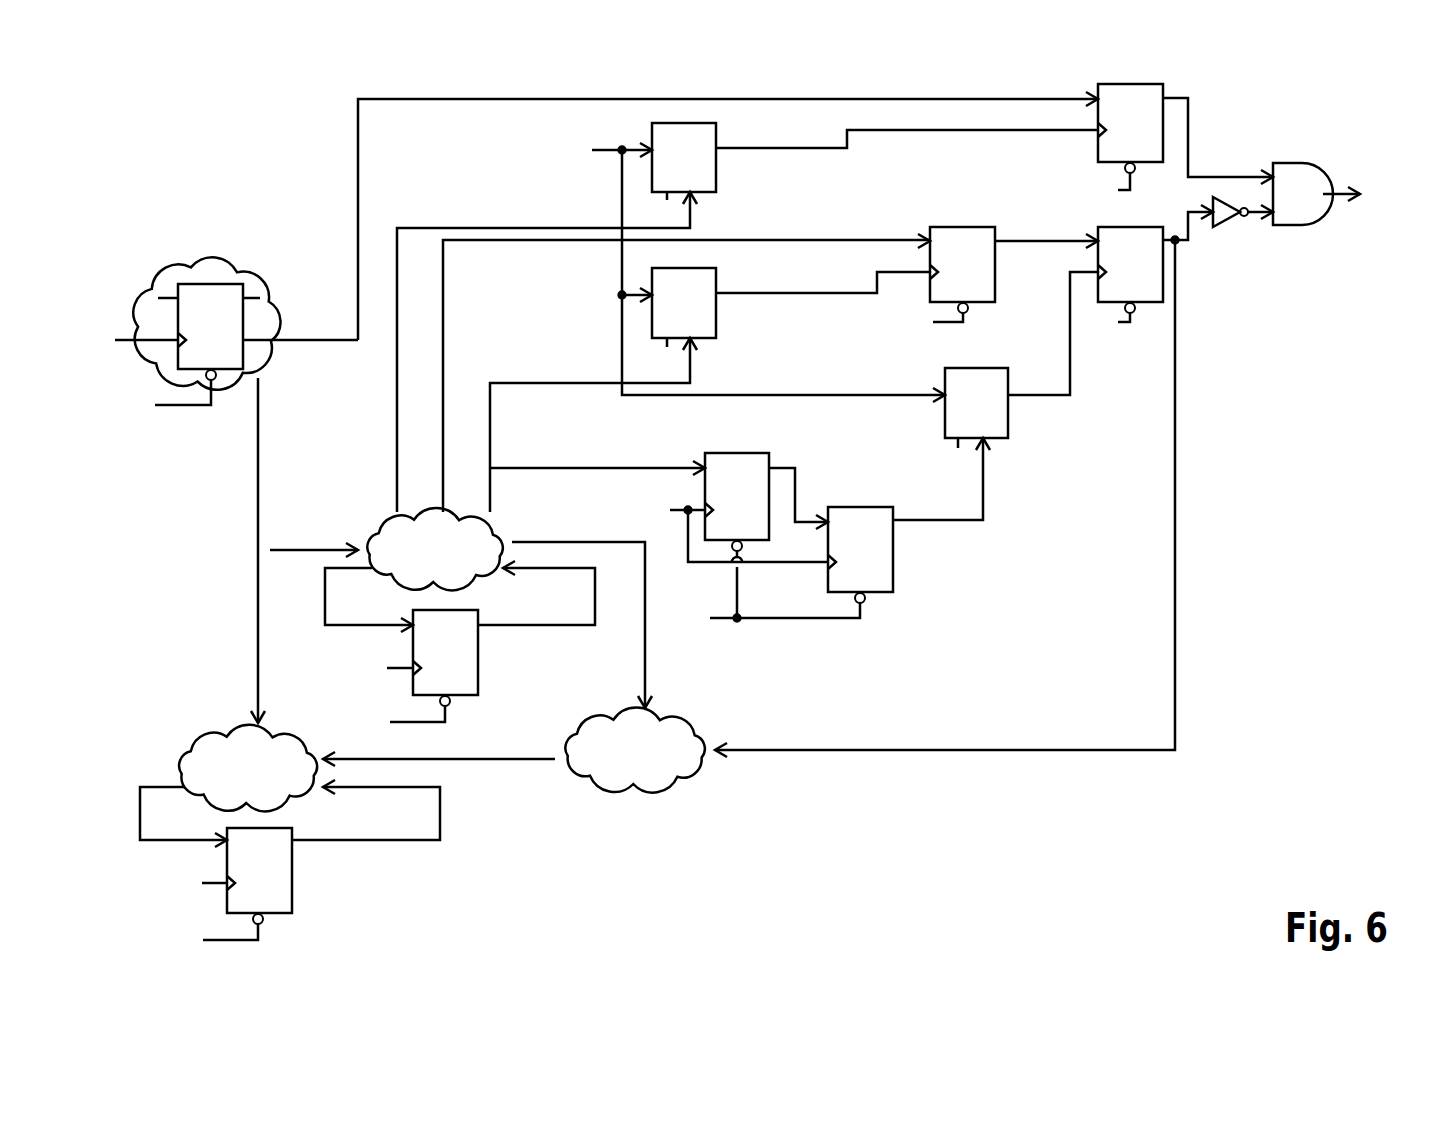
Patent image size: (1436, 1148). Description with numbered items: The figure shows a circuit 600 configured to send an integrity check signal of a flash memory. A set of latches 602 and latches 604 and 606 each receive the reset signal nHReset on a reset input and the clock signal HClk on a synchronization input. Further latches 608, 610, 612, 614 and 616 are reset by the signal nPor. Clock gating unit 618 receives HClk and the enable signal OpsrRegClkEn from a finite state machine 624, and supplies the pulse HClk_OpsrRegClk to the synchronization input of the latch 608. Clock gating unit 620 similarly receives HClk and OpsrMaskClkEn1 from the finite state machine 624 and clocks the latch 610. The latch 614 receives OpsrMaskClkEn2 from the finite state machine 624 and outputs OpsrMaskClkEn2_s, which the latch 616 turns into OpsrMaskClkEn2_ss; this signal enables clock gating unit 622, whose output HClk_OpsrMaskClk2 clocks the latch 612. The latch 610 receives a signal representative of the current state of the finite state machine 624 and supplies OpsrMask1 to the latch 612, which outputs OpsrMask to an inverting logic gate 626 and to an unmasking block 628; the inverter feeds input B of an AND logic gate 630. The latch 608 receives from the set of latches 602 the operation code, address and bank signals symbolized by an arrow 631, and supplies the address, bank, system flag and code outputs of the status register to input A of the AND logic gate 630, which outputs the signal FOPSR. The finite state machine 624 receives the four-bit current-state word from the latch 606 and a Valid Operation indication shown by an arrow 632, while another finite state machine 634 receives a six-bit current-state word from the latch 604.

The circuit 600 is at (1143, 76).
The set of latches 602 is at (213, 256).
The latch 604 is at (292, 877).
The latch 606 is at (478, 680).
The latch 608 is at (1098, 148).
The latch 610 is at (955, 226).
The latch 612 is at (1155, 302).
The latch 614 is at (742, 453).
The latch 616 is at (893, 577).
The clock gating unit 618 is at (710, 192).
The clock gating unit 620 is at (710, 338).
The clock gating unit 622 is at (1003, 438).
The finite state machine 624 is at (505, 530).
The inverting logic gate 626 is at (1228, 226).
The unmasking block 628 is at (632, 795).
The AND logic gate 630 is at (1315, 220).
The arrow 631 is at (895, 99).
The arrow 632 is at (298, 553).
The finite state machine 634 is at (203, 740).